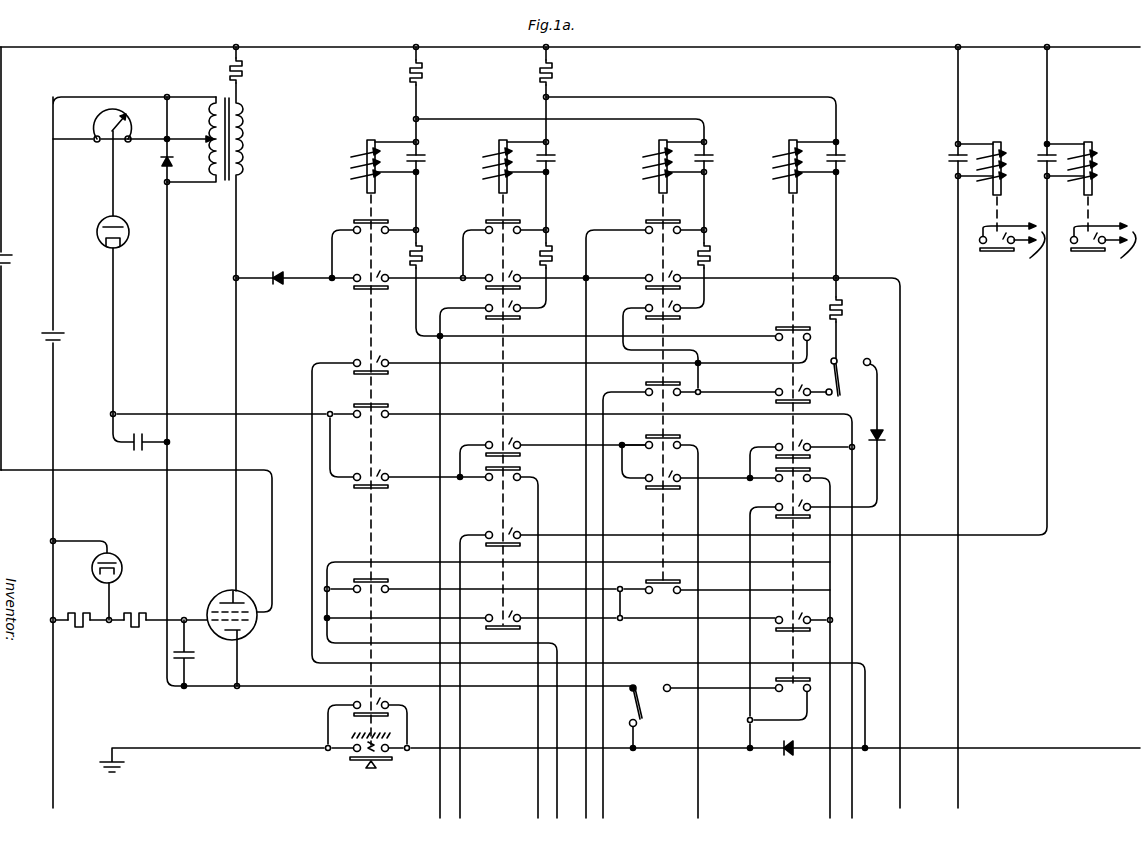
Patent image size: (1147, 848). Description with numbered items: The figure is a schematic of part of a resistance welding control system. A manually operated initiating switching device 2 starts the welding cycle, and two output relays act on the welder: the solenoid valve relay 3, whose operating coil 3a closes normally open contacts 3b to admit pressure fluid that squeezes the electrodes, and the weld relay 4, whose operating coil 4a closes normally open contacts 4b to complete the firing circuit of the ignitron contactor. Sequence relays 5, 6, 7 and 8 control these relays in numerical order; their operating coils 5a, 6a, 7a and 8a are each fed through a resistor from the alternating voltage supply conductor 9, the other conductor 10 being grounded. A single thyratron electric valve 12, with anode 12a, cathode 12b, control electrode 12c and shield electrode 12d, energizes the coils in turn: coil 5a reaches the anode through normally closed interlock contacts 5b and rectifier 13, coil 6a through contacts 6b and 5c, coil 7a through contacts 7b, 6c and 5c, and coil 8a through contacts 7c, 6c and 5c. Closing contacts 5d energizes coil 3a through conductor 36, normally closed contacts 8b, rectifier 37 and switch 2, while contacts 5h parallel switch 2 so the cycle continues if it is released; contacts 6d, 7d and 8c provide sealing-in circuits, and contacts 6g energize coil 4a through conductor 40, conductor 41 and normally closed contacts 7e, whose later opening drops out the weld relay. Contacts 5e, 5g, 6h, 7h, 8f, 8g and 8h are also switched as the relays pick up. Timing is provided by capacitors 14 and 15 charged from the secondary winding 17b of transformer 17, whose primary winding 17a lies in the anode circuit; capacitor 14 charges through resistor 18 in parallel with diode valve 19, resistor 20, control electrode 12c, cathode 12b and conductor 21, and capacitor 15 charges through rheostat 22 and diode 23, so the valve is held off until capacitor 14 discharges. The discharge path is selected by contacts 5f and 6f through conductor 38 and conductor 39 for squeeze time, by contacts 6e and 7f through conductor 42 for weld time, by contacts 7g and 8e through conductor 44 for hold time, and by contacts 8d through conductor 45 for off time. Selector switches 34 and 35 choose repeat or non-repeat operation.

The manually operated switching device 2 is at (350, 766).
The solenoid valve relay 3 is at (1003, 192).
The operating coil 3a is at (1006, 156).
The normally open contacts 3b is at (980, 238).
The weld relay 4 is at (1094, 192).
The operating coil 4a is at (1096, 156).
The normally open contacts 4b is at (1071, 238).
The relay 5 is at (366, 186).
The operating coil 5a is at (356, 160).
The normally closed interlock contacts 5b is at (361, 238).
The normally open contacts 5c is at (420, 272).
The normally open contacts 5d is at (588, 544).
The normally closed contacts 5e is at (383, 419).
The normally open contacts 5f is at (420, 466).
The normally closed contacts 5g is at (378, 594).
The normally open contacts 5h is at (383, 708).
The relay 6 is at (498, 186).
The operating coil 6a is at (488, 160).
The normally closed contacts 6b is at (493, 238).
The normally open contacts 6c is at (566, 272).
The normally open contacts 6d is at (519, 313).
The normally open contacts 6e is at (566, 439).
The normally closed contacts 6f is at (512, 486).
The normally open contacts 6g is at (767, 353).
The normally open contacts 6h is at (631, 612).
The relay 7 is at (658, 186).
The operating coil 7a is at (648, 160).
The normally closed contacts 7b is at (653, 238).
The normally open contacts 7c is at (773, 531).
The normally open contacts 7d is at (680, 313).
The normally closed contacts 7e is at (676, 396).
The normally closed contacts 7f is at (669, 451).
The normally open contacts 7g is at (680, 485).
The normally closed contacts 7h is at (672, 598).
The relay 8 is at (788, 186).
The operating coil 8a is at (778, 160).
The normally closed contacts 8b is at (790, 342).
The normally open contacts 8c is at (787, 390).
The normally open contacts 8d is at (787, 448).
The normally closed contacts 8e is at (785, 485).
The normally open contacts 8f is at (804, 507).
The normally open contacts 8g is at (794, 617).
The normally closed contacts 8h is at (789, 697).
The alternating voltage supply conductor 9 is at (53, 47).
The alternating voltage supply conductor 10 is at (172, 747).
The electric valve 12 is at (246, 596).
The anode 12a is at (224, 600).
The cathode 12b is at (228, 642).
The control electrode 12c is at (251, 629).
The shield electrode 12d is at (217, 609).
The rectifier 13 is at (276, 270).
The capacitor 14 is at (66, 333).
The capacitor 15 is at (130, 447).
The transformer 17 is at (227, 184).
The primary winding 17a is at (249, 128).
The secondary winding 17b is at (209, 124).
The resistor 18 is at (80, 629).
The diode valve 19 is at (112, 561).
The resistor 20 is at (134, 629).
The conductor 21 is at (168, 350).
The rheostat 22 is at (95, 124).
The diode 23 is at (123, 226).
The selector switch 34 is at (644, 711).
The selector switch 35 is at (842, 380).
The conductor 36 is at (458, 308).
The rectifier 37 is at (784, 757).
The conductor 38 is at (540, 503).
The conductor 39 is at (54, 796).
The conductor 40 is at (474, 535).
The conductor 41 is at (616, 391).
The conductor 42 is at (700, 518).
The conductor 44 is at (633, 561).
The conductor 45 is at (558, 414).